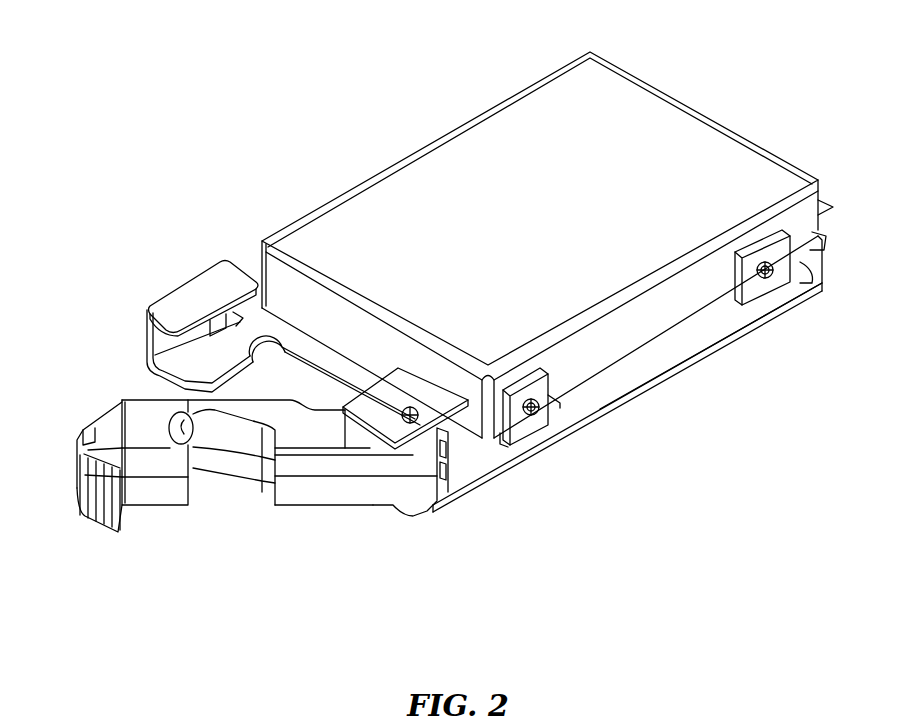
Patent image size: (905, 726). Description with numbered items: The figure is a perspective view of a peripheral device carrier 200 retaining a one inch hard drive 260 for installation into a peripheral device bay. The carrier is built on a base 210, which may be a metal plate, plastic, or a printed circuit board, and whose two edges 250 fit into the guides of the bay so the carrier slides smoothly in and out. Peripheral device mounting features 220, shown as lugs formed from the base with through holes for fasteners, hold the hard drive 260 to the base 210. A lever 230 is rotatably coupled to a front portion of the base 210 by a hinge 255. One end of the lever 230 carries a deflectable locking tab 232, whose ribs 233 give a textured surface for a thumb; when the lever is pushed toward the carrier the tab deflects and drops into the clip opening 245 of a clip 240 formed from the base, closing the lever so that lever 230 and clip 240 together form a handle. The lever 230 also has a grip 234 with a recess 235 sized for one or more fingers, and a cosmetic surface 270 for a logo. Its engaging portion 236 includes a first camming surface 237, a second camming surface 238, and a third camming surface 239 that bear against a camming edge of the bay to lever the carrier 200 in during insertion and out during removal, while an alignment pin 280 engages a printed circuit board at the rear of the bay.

The peripheral device carrier 200 is at (315, 97).
The base 210 is at (677, 343).
The peripheral device mounting features 220 is at (775, 252).
The lever 230 is at (323, 480).
The deflectable locking tab 232 is at (117, 408).
The ribs 233 is at (108, 520).
The grip 234 is at (222, 496).
The recess 235 is at (205, 422).
The engaging portion 236 is at (511, 492).
The first camming surface 237 is at (455, 452).
The second camming surface 238 is at (452, 470).
The third camming surface 239 is at (505, 441).
The clip 240 is at (241, 272).
The clip opening 245 is at (269, 307).
The edges 250 is at (627, 388).
The hinge 255 is at (412, 405).
The one inch hard drive 260 is at (680, 128).
The cosmetic surface 270 is at (400, 483).
The alignment pin 280 is at (822, 205).